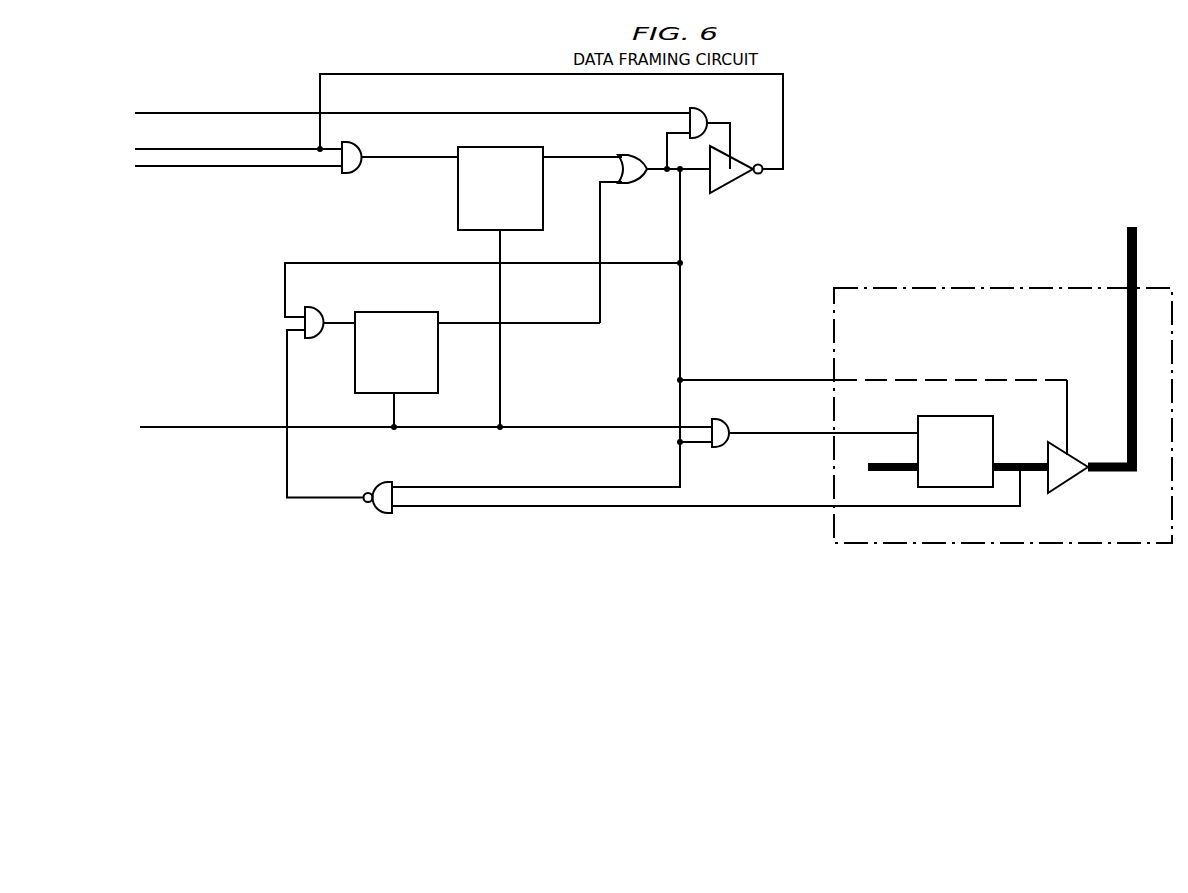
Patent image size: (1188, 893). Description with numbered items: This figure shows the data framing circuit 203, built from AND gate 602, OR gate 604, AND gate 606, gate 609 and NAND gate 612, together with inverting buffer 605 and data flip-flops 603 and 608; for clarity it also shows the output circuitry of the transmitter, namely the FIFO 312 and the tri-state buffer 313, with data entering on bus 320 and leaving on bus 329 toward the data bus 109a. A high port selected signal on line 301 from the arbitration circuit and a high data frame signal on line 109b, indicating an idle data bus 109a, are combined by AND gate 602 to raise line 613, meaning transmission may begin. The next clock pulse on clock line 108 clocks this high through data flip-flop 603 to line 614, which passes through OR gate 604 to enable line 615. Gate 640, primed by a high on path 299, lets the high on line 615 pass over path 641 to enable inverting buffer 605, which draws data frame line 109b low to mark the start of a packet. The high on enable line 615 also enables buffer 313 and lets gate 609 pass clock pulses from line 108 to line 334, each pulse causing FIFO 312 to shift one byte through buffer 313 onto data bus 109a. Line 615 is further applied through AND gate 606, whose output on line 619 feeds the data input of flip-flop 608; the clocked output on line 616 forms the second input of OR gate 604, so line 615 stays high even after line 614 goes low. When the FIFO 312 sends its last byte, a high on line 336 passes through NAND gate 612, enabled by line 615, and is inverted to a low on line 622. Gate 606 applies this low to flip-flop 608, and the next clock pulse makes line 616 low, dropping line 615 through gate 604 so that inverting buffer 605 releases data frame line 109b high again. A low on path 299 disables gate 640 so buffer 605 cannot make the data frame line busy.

The path 299 is at (251, 112).
The data frame line 109b is at (238, 138).
The port selected line 301 is at (238, 176).
The AND gate 602 is at (353, 172).
The line 613 is at (405, 154).
The data flip-flop 603 is at (458, 202).
The line 614 is at (591, 155).
The OR gate 604 is at (636, 183).
The line 616 is at (600, 238).
The gate 640 is at (698, 106).
The path 641 is at (718, 121).
The enable line 615 is at (692, 176).
The inverting buffer 605 is at (733, 183).
The AND gate 606 is at (314, 308).
The output line of AND gate 606 619 is at (333, 327).
The data flip-flop 608 is at (438, 375).
The clock line 108 is at (236, 426).
The gate 609 is at (722, 447).
The line 334 is at (808, 433).
The NAND gate 612 is at (380, 483).
The line 622 is at (300, 499).
The line 336 is at (642, 507).
The data framing circuit 203 is at (958, 287).
The data bus 109a is at (1126, 265).
The FIFO 312 is at (964, 415).
The bus 320 is at (890, 472).
The FIFO output bus 329 is at (1005, 463).
The tri-state buffer 313 is at (1068, 483).